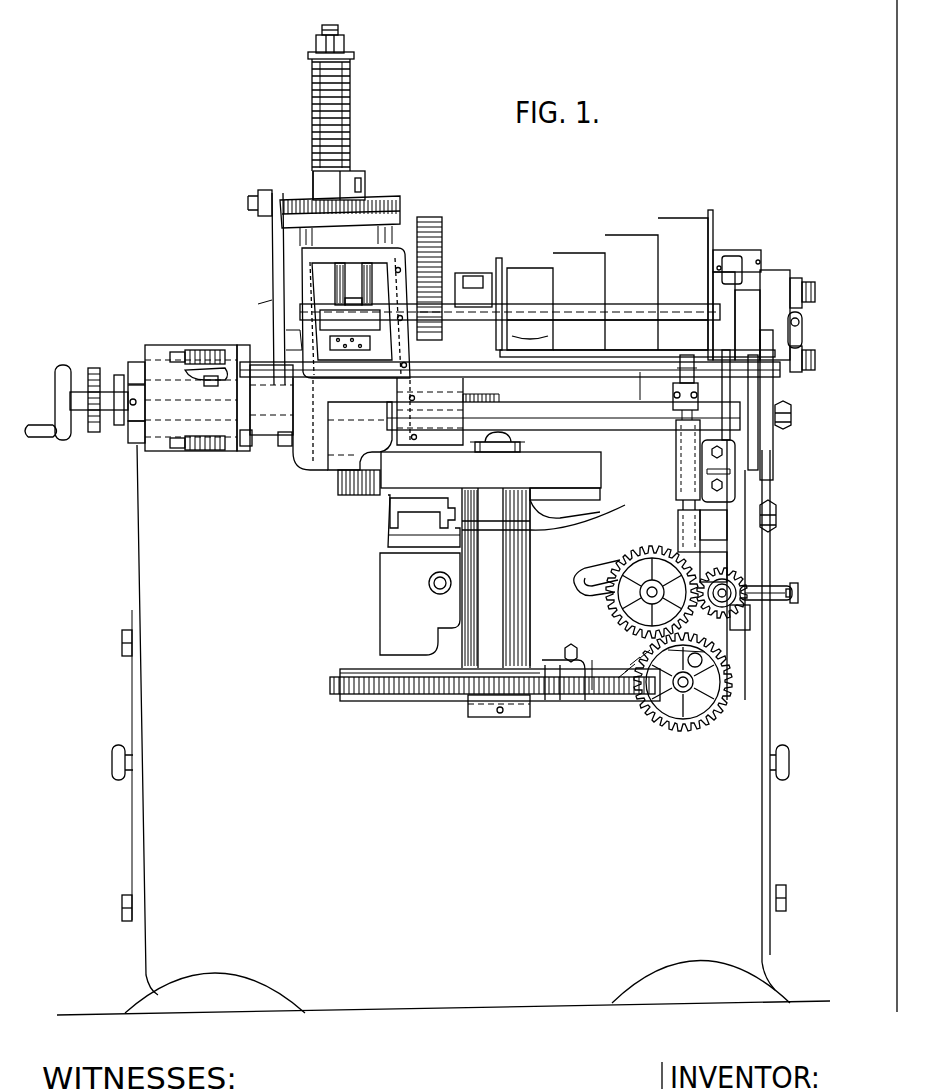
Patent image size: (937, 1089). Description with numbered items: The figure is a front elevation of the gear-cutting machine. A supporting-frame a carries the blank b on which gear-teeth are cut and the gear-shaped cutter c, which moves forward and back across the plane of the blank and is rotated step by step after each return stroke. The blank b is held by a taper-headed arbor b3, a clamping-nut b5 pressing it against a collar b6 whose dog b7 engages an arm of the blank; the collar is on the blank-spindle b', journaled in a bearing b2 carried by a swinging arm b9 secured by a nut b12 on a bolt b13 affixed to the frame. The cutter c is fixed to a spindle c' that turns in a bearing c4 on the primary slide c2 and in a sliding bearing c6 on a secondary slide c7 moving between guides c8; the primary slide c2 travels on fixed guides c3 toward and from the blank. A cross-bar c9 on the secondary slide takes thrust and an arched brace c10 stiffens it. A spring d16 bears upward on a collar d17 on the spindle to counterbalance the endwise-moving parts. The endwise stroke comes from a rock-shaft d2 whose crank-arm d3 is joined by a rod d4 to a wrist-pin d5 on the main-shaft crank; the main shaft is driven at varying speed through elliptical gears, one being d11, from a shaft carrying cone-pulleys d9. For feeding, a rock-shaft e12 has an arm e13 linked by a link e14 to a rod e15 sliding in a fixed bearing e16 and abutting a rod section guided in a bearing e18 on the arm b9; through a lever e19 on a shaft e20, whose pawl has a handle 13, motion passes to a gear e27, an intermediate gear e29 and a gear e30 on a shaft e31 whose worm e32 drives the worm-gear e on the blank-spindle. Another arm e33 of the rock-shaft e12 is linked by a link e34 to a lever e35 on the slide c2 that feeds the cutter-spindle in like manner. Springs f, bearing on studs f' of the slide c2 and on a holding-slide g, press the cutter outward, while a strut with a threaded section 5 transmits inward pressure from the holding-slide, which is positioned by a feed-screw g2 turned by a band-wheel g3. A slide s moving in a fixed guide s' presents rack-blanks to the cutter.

The supporting-frame a is at (443, 730).
The strut section 5 is at (337, 24).
The collar d17 is at (354, 55).
The spring d16 is at (352, 125).
The bearing c4 is at (375, 240).
The lever e35 is at (268, 190).
The link e34 is at (270, 294).
The arm e33 is at (285, 344).
The gear-shaped cutter c is at (379, 387).
The guides c8 is at (348, 284).
The cross-bar c9 is at (350, 320).
The arched brace c10 is at (370, 350).
The elliptical gear d11 is at (432, 216).
The rock-shaft d2 is at (575, 304).
The cone-pulleys d9 is at (628, 253).
The wrist-pin d5 is at (806, 280).
The rod d4 is at (804, 334).
The crank-arm d3 is at (786, 370).
The fixed guides c3 is at (516, 402).
The holding-slide g is at (166, 452).
The feed-screw g2 is at (130, 418).
The band-wheel g3 is at (52, 390).
The springs f is at (205, 408).
The studs f' is at (168, 406).
The primary slide c2 is at (262, 452).
The secondary slide c7 is at (300, 452).
The sliding bearing c6 is at (360, 436).
The cutter-spindle c' is at (329, 487).
The blank b is at (502, 470).
The clamping-nut b5 is at (520, 447).
The taper-headed arbor b3 is at (496, 432).
The bearing b2 is at (520, 596).
The dog b7 is at (580, 494).
The collar b6 is at (530, 520).
The swinging arm b9 is at (546, 517).
The slide s is at (396, 520).
The fixed guide s' is at (399, 532).
The bolt b13 is at (432, 578).
The nut b12 is at (428, 590).
The blank-spindle b' is at (499, 725).
The worm-gear e is at (328, 688).
The intermediate gear e29 is at (615, 606).
The shaft e20 is at (730, 578).
The lever e19 is at (746, 588).
The handle 13 is at (804, 586).
The gear e27 is at (743, 625).
The gear e30 is at (672, 728).
The shaft e31 is at (700, 714).
The worm e32 is at (700, 682).
The arm e13 is at (684, 355).
The rock-shaft e12 is at (646, 366).
The link e14 is at (673, 398).
The rod e15 is at (675, 422).
The fixed bearing e16 is at (676, 456).
The bearing e18 is at (678, 526).